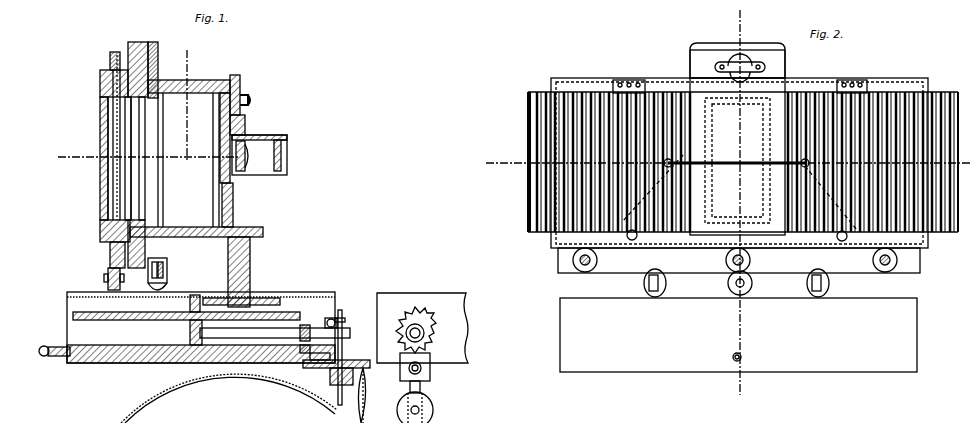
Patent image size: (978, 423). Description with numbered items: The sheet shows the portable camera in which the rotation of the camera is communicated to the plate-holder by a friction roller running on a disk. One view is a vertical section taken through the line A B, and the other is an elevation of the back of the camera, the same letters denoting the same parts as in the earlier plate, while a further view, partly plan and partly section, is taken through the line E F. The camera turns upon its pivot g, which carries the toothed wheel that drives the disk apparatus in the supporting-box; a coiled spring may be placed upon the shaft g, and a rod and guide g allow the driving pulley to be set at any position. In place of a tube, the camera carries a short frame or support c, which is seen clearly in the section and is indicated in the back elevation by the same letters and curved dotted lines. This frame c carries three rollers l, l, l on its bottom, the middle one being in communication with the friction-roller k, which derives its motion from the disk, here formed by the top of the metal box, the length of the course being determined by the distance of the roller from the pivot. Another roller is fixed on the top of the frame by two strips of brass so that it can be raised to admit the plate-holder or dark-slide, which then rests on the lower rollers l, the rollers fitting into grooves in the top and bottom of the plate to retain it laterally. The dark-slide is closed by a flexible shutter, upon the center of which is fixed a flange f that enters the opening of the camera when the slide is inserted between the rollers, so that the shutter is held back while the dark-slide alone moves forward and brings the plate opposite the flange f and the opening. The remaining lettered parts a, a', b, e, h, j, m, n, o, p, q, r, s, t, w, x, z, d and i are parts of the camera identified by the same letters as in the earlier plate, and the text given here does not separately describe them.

In FIG. 1, the section line E is at (185, 99).
In FIG. 1, the section line F is at (143, 157).
In FIG. 2, the section line F is at (722, 161).
In FIG. 2, the section line A is at (745, 152).
In FIG. 2, the section line B is at (740, 356).
In FIG. 1, the cylinder a is at (111, 158).
In FIG. 1, the side chamber a' is at (259, 155).
In FIG. 1, the cylinder casing b is at (208, 88).
In FIG. 1, the short frame or support c is at (137, 60).
In FIG. 2, the short frame or support c is at (739, 158).
In FIG. 1, the flange e is at (104, 79).
In FIG. 1, the flange f is at (132, 158).
In FIG. 1, the pivot g is at (250, 246).
In FIG. 1, the valve cup h is at (157, 274).
In FIG. 1, the frame plate j is at (201, 327).
In FIG. 1, the friction-roller k is at (108, 276).
In FIG. 2, the friction-roller k is at (740, 187).
In FIG. 1, the rollers l is at (110, 256).
In FIG. 1, the nut m is at (112, 130).
In FIG. 1, the central panel n is at (202, 331).
In FIG. 2, the central panel n is at (739, 159).
In FIG. 1, the plug o is at (140, 247).
In FIG. 1, the bracket p is at (334, 366).
In FIG. 1, the rod q is at (250, 281).
In FIG. 1, the lever r is at (325, 322).
In FIG. 1, the rod s is at (275, 338).
In FIG. 1, the post t is at (190, 305).
In FIG. 1, the tube w is at (158, 160).
In FIG. 1, the ratchet wheel x is at (422, 358).
In FIG. 1, the pendulum z is at (367, 395).
In FIG. 2, the wheel d is at (735, 260).
In FIG. 2, the roller i is at (736, 283).